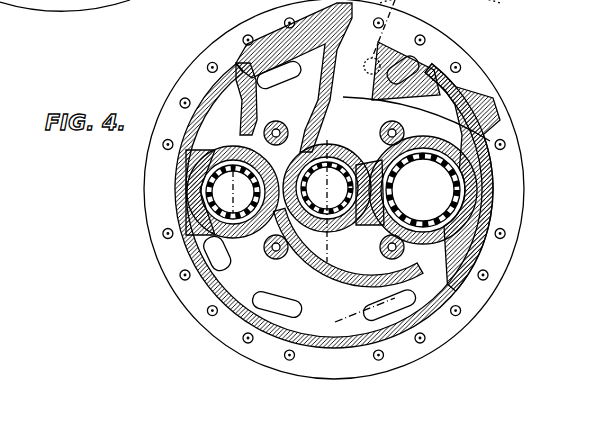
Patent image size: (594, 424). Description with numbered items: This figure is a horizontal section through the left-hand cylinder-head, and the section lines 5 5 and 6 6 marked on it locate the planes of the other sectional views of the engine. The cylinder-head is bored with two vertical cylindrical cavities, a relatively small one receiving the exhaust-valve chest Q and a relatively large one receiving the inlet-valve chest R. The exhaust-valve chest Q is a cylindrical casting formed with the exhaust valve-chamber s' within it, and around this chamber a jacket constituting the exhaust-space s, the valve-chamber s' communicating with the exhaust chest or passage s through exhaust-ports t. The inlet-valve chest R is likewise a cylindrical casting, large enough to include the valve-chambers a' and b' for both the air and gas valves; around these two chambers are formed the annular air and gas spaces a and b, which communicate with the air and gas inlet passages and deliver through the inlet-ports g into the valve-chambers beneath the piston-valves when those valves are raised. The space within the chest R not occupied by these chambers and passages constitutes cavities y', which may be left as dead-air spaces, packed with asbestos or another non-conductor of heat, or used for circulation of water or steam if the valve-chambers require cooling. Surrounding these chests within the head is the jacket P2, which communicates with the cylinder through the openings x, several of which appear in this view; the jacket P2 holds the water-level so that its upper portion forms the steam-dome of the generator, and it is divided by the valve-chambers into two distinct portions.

The section line 5 5 is at (160, 190).
The section line 6 6 is at (63, 0).
The exhaust-valve chest Q is at (183, 213).
The inlet-valve chest R is at (300, 268).
The openings x is at (336, 188).
The jacket P2 is at (341, 149).
The exhaust chest or passage s is at (242, 103).
The valve-chamber s' is at (233, 192).
The exhaust-ports t is at (233, 192).
The air-chest a is at (432, 145).
The valve-chamber a' is at (423, 190).
The gas-chest b is at (327, 201).
The valve-chamber b' is at (327, 188).
The inlet-ports g is at (333, 190).
The cavities y' is at (385, 199).